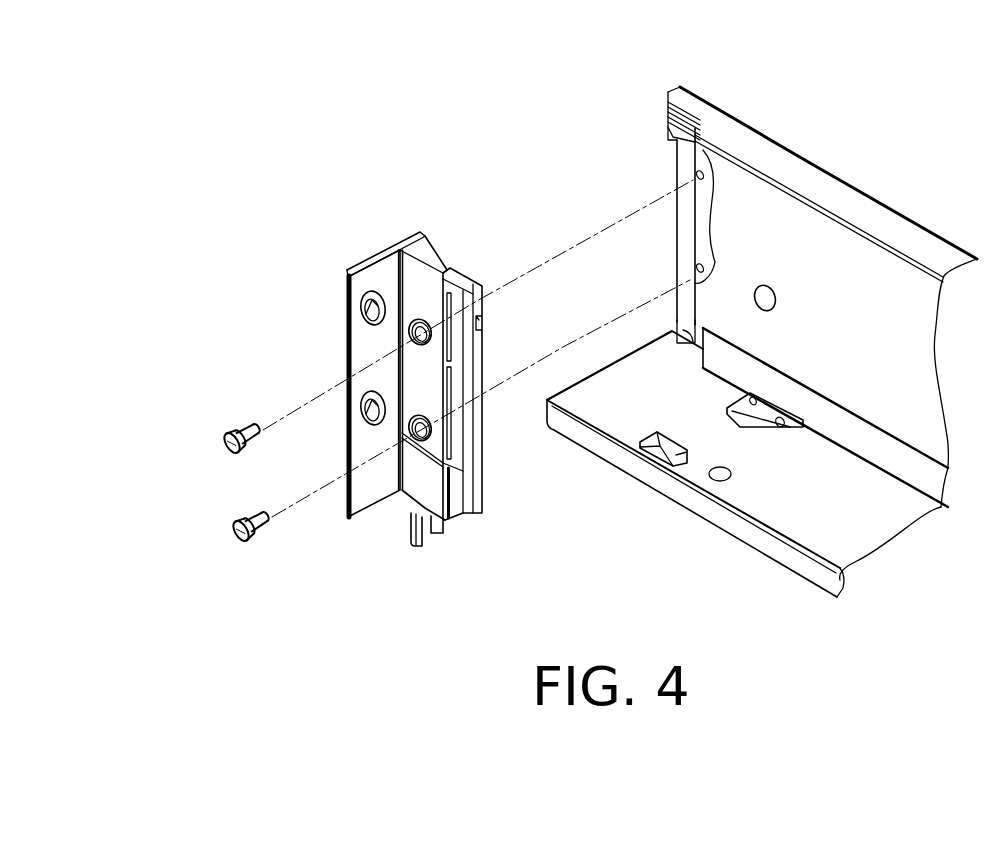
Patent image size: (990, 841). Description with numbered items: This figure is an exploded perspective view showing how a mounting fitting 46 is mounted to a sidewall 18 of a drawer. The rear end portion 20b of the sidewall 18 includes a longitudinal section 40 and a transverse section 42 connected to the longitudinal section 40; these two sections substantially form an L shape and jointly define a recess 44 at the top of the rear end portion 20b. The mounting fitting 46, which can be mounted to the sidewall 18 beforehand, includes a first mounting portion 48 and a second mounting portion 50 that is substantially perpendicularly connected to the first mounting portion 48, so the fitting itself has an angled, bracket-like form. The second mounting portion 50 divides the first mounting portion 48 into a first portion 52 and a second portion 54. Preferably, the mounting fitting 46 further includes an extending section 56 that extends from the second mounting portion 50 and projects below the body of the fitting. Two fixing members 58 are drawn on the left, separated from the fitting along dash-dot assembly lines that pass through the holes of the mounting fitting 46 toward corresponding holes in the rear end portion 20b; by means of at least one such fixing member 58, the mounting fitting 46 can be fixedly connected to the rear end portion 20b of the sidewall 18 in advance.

The sidewall 18 is at (906, 211).
The rear end portion 20b is at (795, 218).
The longitudinal section 40 is at (710, 121).
The transverse section 42 is at (707, 130).
The recess 44 is at (682, 104).
The mounting fitting 46 is at (290, 224).
The first mounting portion 48 is at (376, 250).
The second mounting portion 50 is at (450, 265).
The first portion 52 is at (348, 268).
The second portion 54 is at (406, 233).
The extending section 56 is at (416, 512).
The fixing member 58 is at (226, 445).